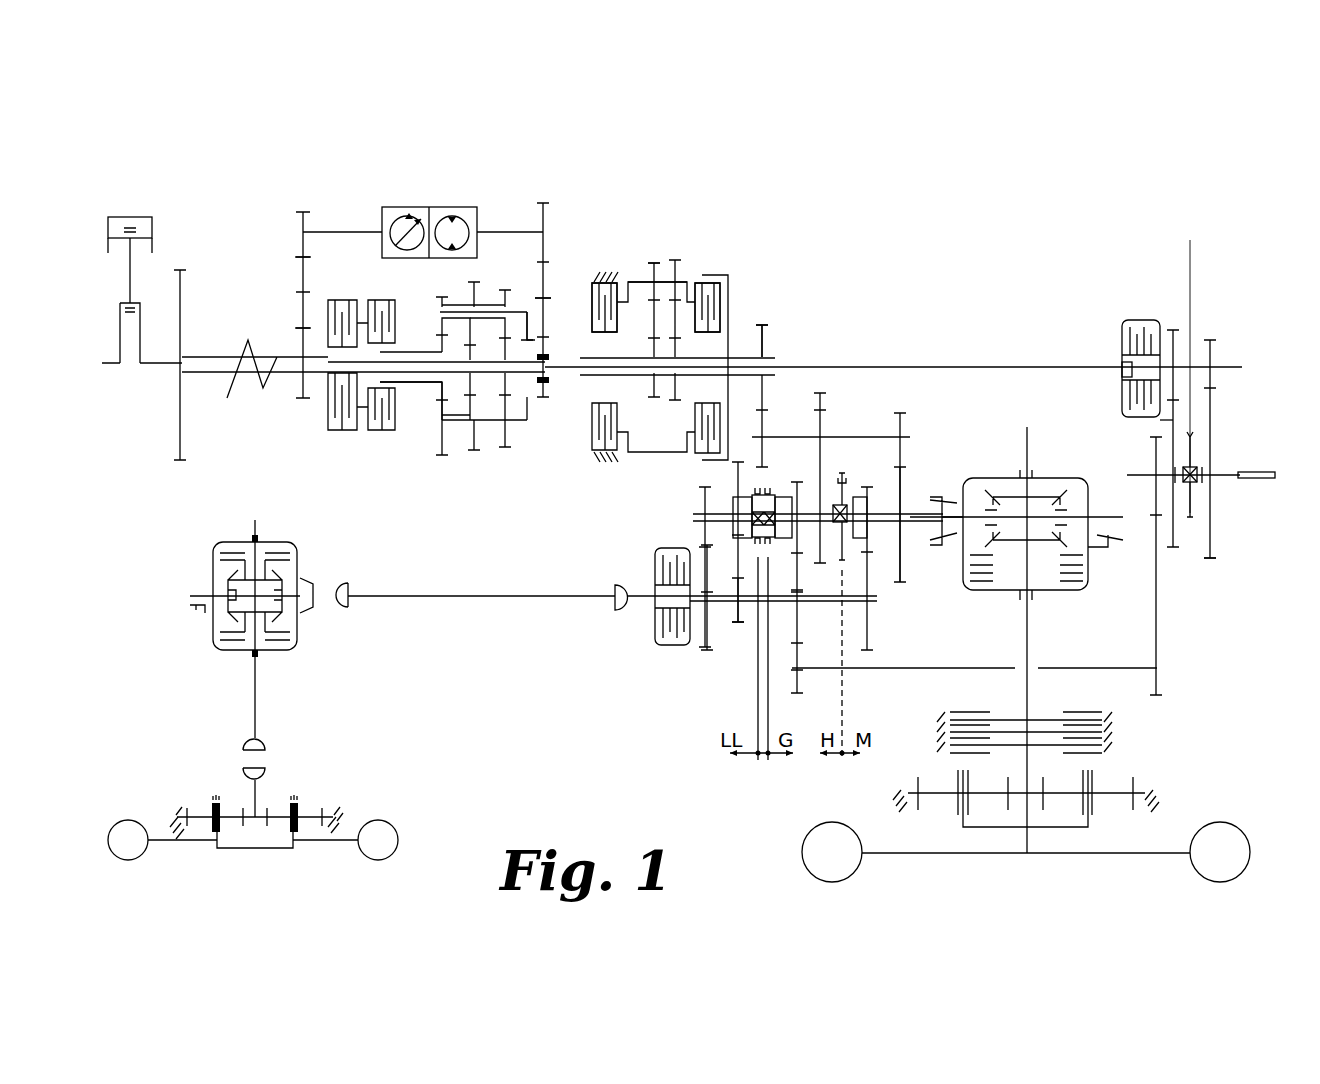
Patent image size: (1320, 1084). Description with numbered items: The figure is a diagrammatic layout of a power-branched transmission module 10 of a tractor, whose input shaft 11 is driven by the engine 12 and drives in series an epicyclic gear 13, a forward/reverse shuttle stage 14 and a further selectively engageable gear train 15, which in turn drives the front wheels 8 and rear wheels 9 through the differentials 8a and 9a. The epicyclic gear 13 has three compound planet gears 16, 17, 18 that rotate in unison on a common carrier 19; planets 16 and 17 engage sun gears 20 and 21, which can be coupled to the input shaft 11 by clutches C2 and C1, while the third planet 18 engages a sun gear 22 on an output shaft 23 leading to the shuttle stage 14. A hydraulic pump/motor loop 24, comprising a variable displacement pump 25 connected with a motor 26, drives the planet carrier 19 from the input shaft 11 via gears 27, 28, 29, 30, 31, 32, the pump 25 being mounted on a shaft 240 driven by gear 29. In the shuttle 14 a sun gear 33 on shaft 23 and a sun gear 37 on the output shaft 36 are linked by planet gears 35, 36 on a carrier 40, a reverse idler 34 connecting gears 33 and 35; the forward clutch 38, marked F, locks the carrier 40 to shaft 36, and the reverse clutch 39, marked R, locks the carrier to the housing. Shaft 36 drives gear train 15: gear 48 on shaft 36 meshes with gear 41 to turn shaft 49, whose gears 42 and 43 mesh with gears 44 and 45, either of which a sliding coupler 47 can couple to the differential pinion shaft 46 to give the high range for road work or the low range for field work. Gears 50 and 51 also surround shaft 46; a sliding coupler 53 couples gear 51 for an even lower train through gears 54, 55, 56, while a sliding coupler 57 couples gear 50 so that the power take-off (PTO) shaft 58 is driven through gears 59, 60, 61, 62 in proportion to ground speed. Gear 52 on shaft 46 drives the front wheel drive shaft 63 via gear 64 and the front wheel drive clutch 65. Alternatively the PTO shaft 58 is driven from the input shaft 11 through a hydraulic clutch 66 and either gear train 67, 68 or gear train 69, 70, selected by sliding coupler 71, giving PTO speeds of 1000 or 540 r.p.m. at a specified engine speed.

The front wheels 8 is at (128, 820).
The front differential 8a is at (215, 557).
The rear wheels 9 is at (1218, 832).
The rear differential 9a is at (1067, 582).
The power-branched transmission module 10 is at (367, 193).
The input shaft 11 is at (215, 362).
The engine 12 is at (135, 216).
The epicyclic gear 13 is at (408, 399).
The forward/reverse shuttle stage 14 is at (660, 247).
The further selectively engageable gear train 15 is at (877, 583).
The compound planet gear 16 is at (442, 297).
The compound planet gear 17 is at (475, 282).
The compound planet gear 18 is at (505, 290).
The common carrier 19 is at (520, 310).
The sun gear 20 is at (442, 338).
The sun gear 21 is at (470, 352).
The sun gear 22 is at (507, 387).
The output shaft of the epicyclic gear 23 is at (570, 348).
The hydraulic pump/motor loop 24 is at (473, 155).
The variable displacement pump 25 is at (398, 207).
The motor 26 is at (456, 207).
The gear 27 is at (284, 336).
The gear 28 is at (303, 280).
The gear 29 is at (303, 238).
The gear 30 is at (545, 243).
The gear 31 is at (545, 287).
The gear 32 is at (546, 384).
The sun gear 33 is at (652, 350).
The reverse idler 34 is at (652, 332).
The planet gear 35 is at (650, 270).
The output shaft 36 is at (688, 282).
The sun gear 37 is at (678, 347).
The forward clutch 38 is at (710, 288).
The reverse clutch 39 is at (592, 314).
The carrier 40 is at (688, 277).
The gear 41 is at (763, 425).
The gear 42 is at (822, 411).
The gear 43 is at (902, 420).
The gear 44 is at (823, 481).
The gear 45 is at (903, 468).
The differential pinion shaft 46 is at (912, 522).
The sliding coupler 47 is at (843, 490).
The gear 48 is at (763, 340).
The shaft 49 is at (878, 433).
The gear 50 is at (797, 485).
The gear 51 is at (738, 495).
The gear 52 is at (705, 512).
The sliding coupler 53 is at (752, 540).
The gear 54 is at (867, 502).
The gear 55 is at (867, 625).
The gear 56 is at (733, 617).
The sliding coupler 57 is at (767, 544).
The PTO shaft 58 is at (1260, 478).
The gear 59 is at (797, 622).
The gear 60 is at (797, 678).
The gear 61 is at (1157, 680).
The gear 62 is at (1152, 465).
The front wheel drive shaft 63 is at (445, 596).
The gear 64 is at (703, 640).
The front wheel drive clutch 65 is at (660, 563).
The hydraulic clutch 66 is at (1127, 340).
The gear 67 is at (1170, 347).
The gear 68 is at (1172, 427).
The gear 69 is at (1212, 353).
The gear 70 is at (1212, 525).
The sliding coupler 71 is at (1192, 445).
The shaft 240 is at (325, 232).
The 1000 r.p.m. PTO speed 1000 is at (1187, 240).
The 540 r.p.m. PTO speed 540 is at (1190, 252).
The clutch C1 is at (342, 351).
The clutch C2 is at (379, 351).
The reverse clutch R is at (605, 356).
The forward clutch F is at (707, 355).
The power take-off PTO is at (1268, 460).